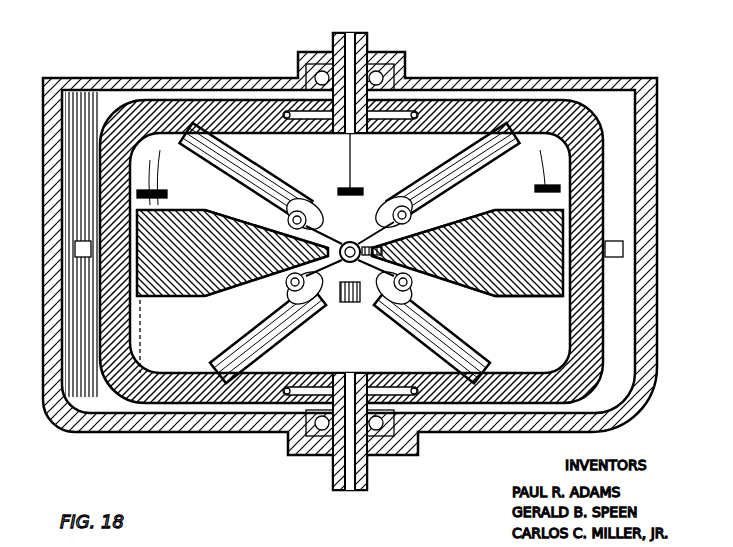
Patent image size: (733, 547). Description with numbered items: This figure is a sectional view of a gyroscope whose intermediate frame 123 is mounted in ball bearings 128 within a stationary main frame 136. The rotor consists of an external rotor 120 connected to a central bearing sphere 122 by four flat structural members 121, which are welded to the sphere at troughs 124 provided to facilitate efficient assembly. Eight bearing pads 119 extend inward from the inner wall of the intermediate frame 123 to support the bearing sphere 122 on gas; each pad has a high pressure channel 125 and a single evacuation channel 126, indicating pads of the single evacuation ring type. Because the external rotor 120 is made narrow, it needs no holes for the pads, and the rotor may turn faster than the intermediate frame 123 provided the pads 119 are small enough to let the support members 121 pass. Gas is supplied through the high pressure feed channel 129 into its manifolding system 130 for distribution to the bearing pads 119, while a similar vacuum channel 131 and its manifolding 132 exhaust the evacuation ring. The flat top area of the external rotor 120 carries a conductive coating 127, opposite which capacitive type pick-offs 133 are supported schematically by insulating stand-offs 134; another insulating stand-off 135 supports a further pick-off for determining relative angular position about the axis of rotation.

The bearing pads 119 is at (250, 175).
The external rotor 120 is at (495, 300).
The flat structural members 121 is at (350, 253).
The bearing sphere 122 is at (345, 305).
The intermediate frame 123 is at (590, 340).
The troughs 124 is at (300, 262).
The high pressure channel 125 is at (265, 240).
The single evacuation channel 126 is at (286, 222).
The conductive coating 127 is at (536, 190).
The ball bearings 128 is at (372, 60).
The high pressure feed channel 129 is at (347, 35).
The manifolding system 130 is at (306, 80).
The vacuum channel 131 is at (350, 492).
The manifolding 132 is at (290, 440).
The capacitive type pick-offs 133 is at (345, 188).
The insulating stand-offs 134 is at (351, 148).
The insulating stand-off 135 is at (150, 330).
The main frame 136 is at (658, 292).